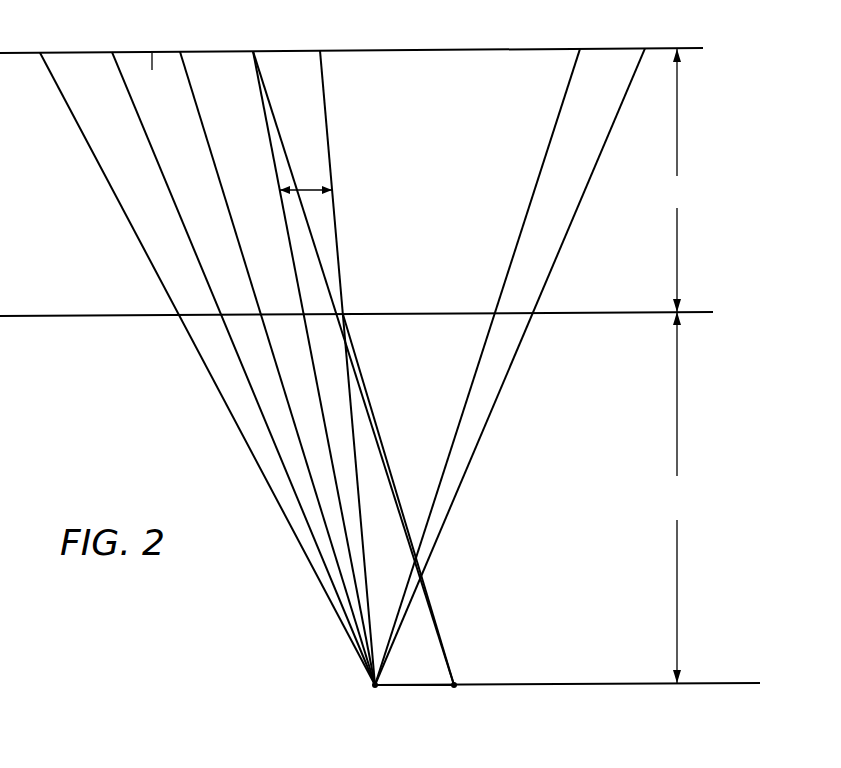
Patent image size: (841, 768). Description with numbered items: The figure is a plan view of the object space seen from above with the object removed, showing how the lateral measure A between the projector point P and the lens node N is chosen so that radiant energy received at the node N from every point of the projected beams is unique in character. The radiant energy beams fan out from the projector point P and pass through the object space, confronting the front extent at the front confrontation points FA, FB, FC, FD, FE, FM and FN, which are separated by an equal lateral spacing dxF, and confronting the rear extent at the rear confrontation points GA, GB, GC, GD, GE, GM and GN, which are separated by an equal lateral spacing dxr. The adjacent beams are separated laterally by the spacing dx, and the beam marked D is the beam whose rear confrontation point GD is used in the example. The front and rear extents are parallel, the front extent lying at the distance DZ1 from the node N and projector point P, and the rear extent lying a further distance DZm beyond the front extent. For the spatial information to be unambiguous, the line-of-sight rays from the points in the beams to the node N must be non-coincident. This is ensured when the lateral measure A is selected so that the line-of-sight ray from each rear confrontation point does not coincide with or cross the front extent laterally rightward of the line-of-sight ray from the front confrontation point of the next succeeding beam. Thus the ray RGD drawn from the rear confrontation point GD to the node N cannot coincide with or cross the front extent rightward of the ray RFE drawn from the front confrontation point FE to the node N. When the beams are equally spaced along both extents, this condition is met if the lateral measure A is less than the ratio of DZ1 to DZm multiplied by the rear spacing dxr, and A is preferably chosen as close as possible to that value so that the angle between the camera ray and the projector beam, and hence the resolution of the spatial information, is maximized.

The rear confrontation point GA is at (40, 53).
The rear confrontation point GB is at (112, 52).
The rear confrontation point GC is at (180, 52).
The rear confrontation point GD is at (253, 51).
The rear confrontation point GE is at (320, 51).
The rear confrontation point GM is at (580, 49).
The rear confrontation point GN is at (645, 48).
The front confrontation point FA is at (178, 317).
The front confrontation point FB is at (220, 317).
The front confrontation point FC is at (262, 313).
The front confrontation point FD is at (303, 317).
The front confrontation point FE is at (347, 318).
The front confrontation point FM is at (496, 316).
The front confrontation point FN is at (534, 315).
The projector point P is at (373, 698).
The lens node N is at (454, 698).
The lateral measure A is at (414, 671).
The beam designation D is at (157, 205).
The lateral beam spacing dx is at (306, 180).
The rear lateral spacing dxr is at (151, 74).
The front lateral spacing dxF is at (318, 315).
The line-of-sight ray RFE is at (383, 443).
The line-of-sight ray RGD is at (393, 503).
The rear-extent distance DZm is at (683, 180).
The front-extent distance DZ1 is at (681, 497).